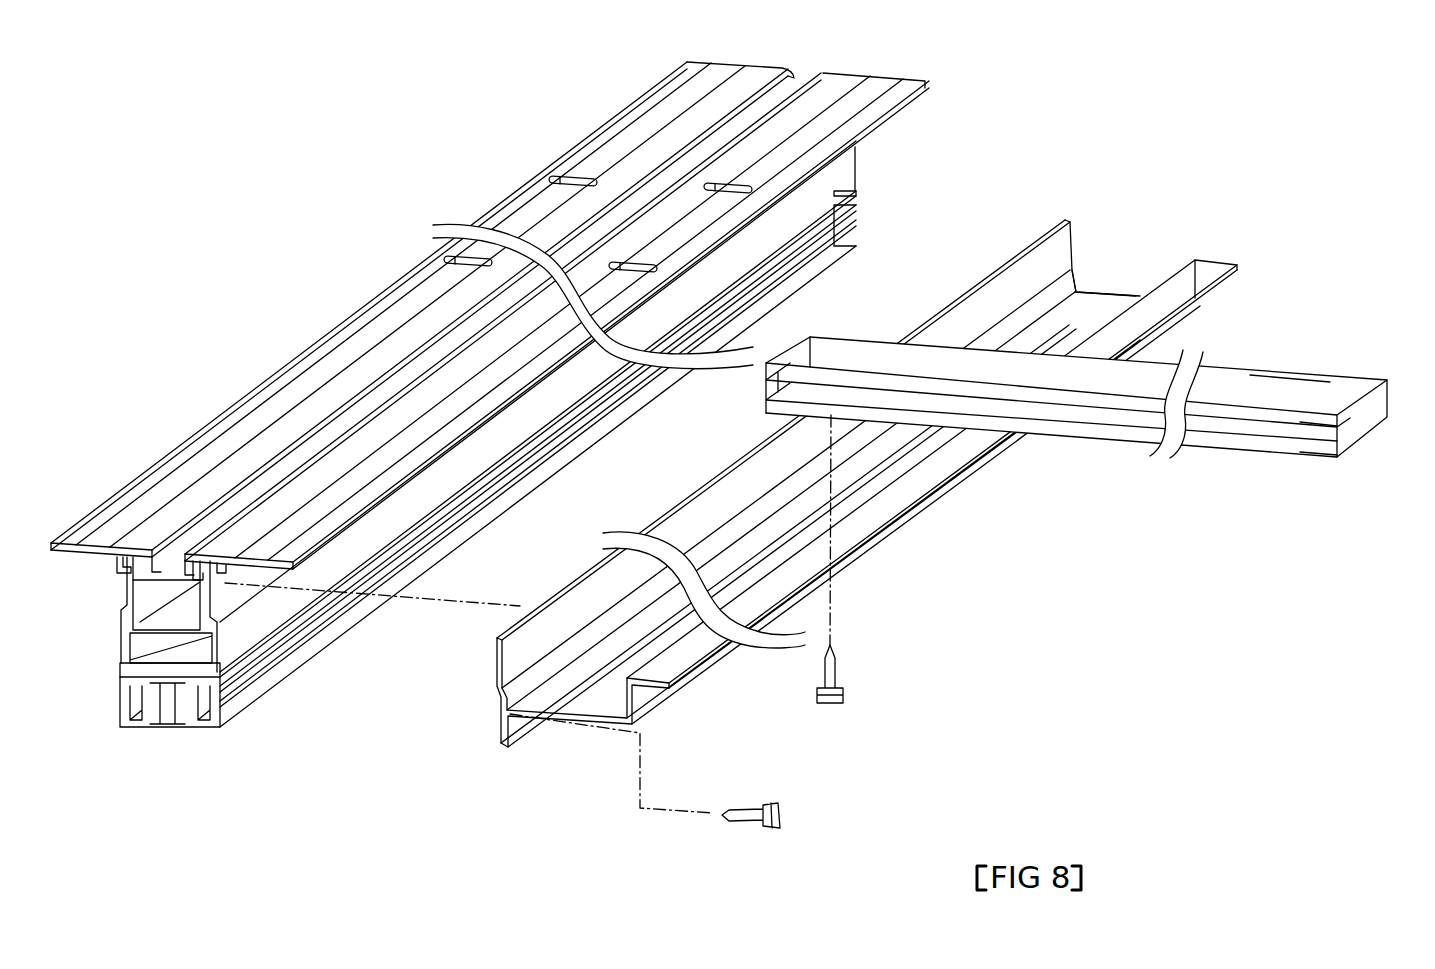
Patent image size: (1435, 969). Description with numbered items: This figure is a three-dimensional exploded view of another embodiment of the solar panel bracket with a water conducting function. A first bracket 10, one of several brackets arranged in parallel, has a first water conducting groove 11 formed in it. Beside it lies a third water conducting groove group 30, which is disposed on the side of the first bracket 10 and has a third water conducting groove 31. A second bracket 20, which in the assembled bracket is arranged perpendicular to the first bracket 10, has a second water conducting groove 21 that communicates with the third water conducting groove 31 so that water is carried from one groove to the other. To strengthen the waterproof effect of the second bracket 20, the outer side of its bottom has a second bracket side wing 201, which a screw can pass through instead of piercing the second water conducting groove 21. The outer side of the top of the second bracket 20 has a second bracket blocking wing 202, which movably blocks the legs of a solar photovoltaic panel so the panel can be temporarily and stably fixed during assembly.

The first bracket 10 is at (267, 693).
The first water conducting groove 11 is at (150, 603).
The second bracket 20 is at (1207, 452).
The second water conducting groove 21 is at (1260, 393).
The second bracket side wing 201 is at (1337, 457).
The second bracket blocking wing 202 is at (1327, 410).
The third water conducting groove group 30 is at (885, 547).
The third water conducting groove 31 is at (1097, 303).